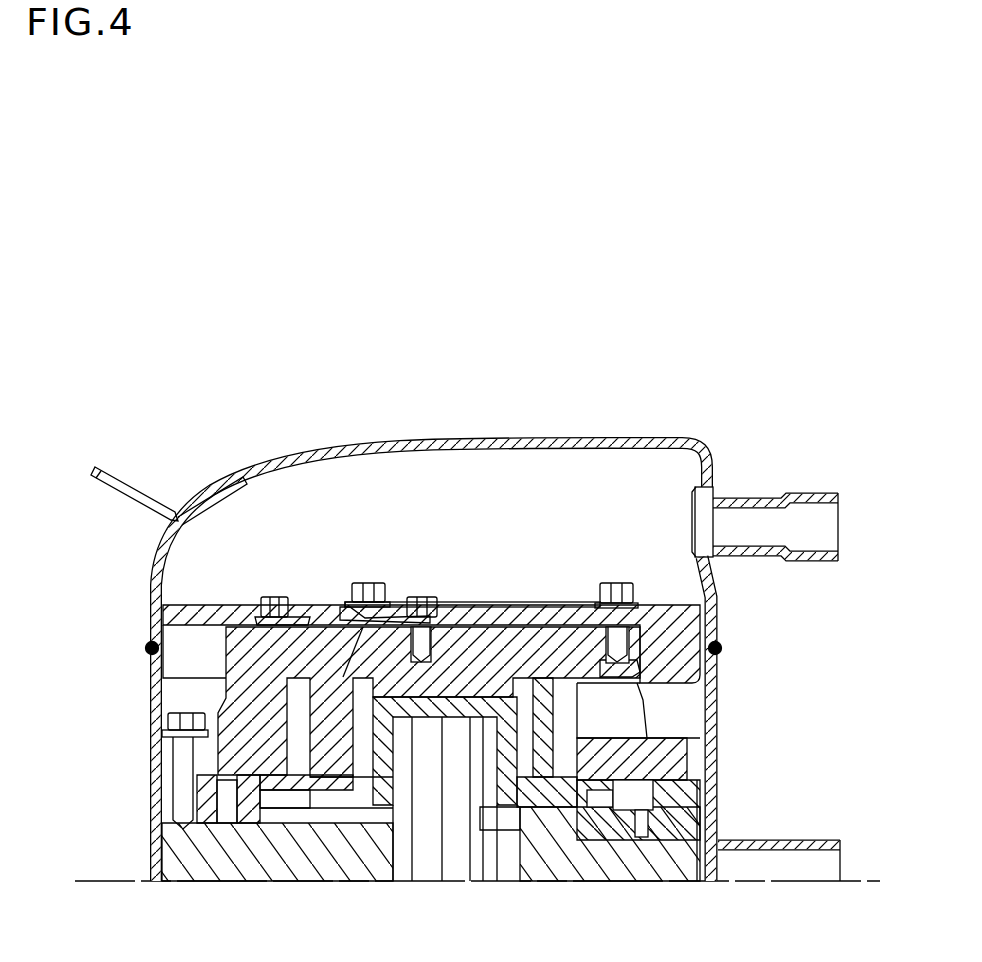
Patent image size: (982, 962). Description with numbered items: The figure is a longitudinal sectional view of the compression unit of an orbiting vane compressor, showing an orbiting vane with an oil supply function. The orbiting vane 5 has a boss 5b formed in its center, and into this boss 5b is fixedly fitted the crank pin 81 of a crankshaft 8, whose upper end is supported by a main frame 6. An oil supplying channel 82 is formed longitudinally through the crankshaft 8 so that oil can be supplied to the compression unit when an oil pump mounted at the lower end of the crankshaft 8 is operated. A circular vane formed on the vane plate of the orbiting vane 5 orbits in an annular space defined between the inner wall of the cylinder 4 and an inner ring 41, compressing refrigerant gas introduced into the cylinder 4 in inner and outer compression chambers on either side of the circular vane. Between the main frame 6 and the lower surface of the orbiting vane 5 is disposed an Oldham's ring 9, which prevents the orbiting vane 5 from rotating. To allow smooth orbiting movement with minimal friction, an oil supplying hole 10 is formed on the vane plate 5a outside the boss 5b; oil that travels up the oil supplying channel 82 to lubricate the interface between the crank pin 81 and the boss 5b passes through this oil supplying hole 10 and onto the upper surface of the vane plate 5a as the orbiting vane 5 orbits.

The cylinder 4 is at (226, 647).
The orbiting vane 5 is at (580, 762).
The vane plate 5a is at (520, 840).
The boss 5b is at (455, 697).
The main frame 6 is at (182, 852).
The crankshaft 8 is at (409, 870).
The crank pin 81 is at (377, 793).
The oil supplying channel 82 is at (456, 870).
The Oldham's ring 9 is at (628, 815).
The oil supplying hole 10 is at (368, 793).
The inner ring 41 is at (600, 708).